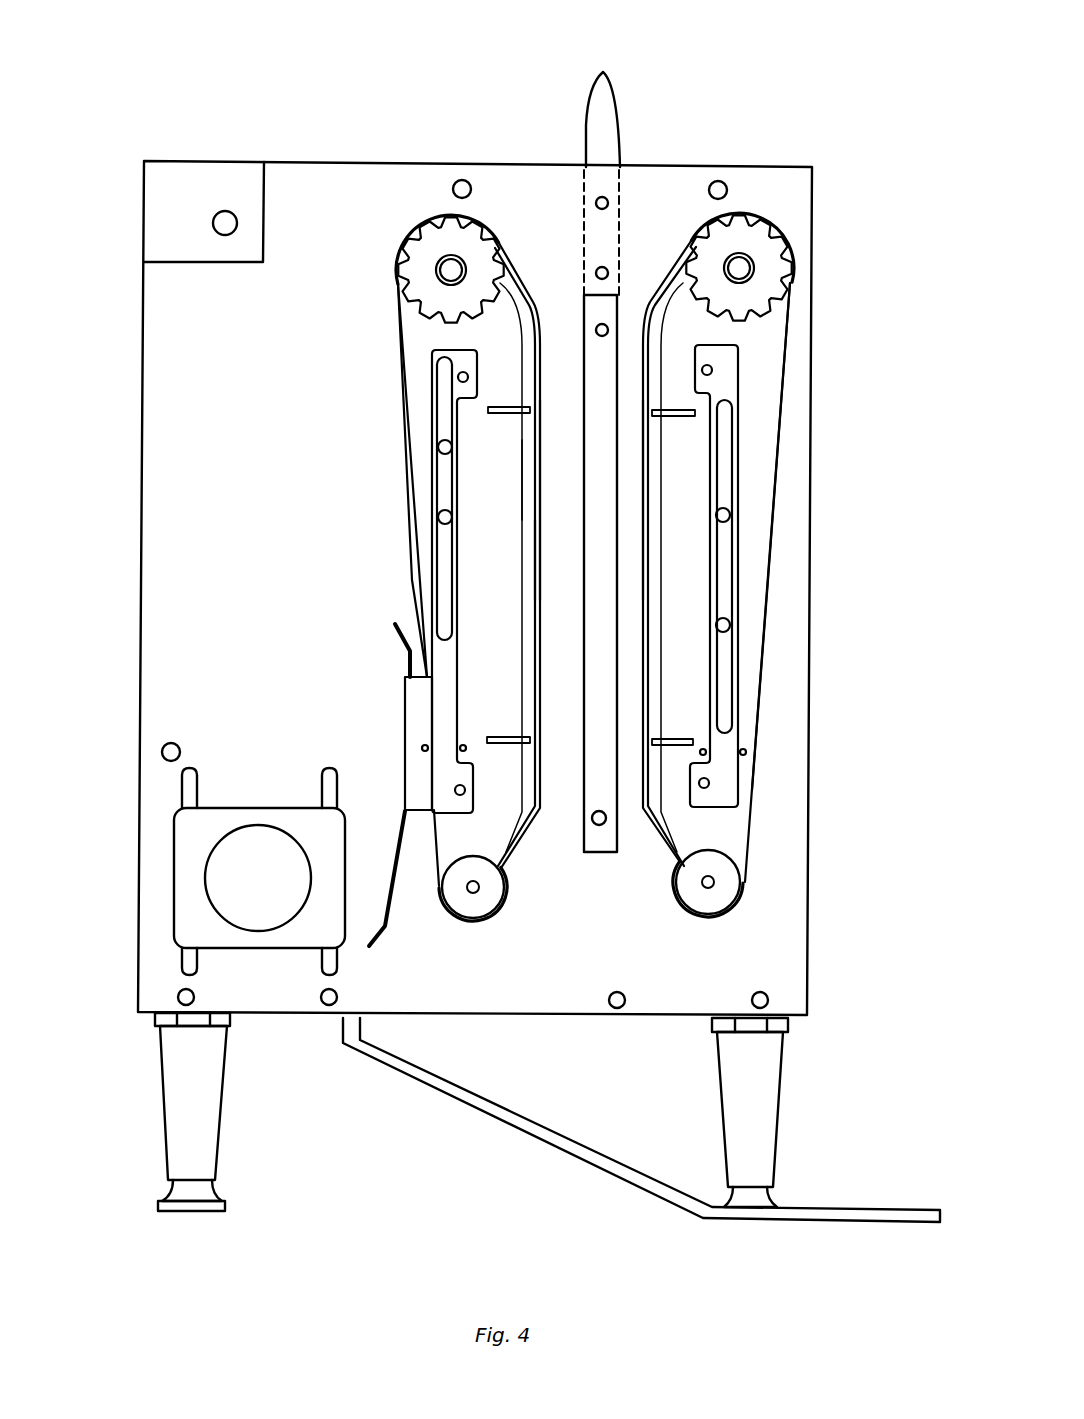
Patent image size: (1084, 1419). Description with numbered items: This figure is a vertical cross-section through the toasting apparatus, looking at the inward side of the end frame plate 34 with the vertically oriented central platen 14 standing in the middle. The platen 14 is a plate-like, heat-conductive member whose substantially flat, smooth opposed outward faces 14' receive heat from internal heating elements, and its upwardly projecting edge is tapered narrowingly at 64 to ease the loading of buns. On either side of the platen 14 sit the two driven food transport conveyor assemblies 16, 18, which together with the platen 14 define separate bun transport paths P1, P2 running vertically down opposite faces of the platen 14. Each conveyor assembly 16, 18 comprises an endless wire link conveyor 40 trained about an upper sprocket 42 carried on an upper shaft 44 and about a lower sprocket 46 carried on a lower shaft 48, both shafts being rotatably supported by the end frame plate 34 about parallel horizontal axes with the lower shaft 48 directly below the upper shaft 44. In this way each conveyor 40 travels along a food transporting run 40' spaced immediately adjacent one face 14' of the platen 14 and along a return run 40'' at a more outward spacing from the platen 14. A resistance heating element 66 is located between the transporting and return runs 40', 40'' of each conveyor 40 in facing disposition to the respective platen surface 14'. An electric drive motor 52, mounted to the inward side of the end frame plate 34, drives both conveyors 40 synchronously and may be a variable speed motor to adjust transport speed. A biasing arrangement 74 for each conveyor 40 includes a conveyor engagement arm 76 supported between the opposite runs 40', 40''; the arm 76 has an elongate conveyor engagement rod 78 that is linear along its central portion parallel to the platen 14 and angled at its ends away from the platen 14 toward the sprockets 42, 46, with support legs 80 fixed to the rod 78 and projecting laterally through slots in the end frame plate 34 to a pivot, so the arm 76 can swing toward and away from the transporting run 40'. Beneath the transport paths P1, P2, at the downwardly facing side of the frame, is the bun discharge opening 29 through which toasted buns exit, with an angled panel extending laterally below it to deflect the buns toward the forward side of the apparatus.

The central platen 14 is at (588, 567).
The outward faces of the platen 14' is at (604, 248).
The food transport conveyor assembly 16 is at (377, 357).
The food transport conveyor assembly 18 is at (787, 407).
The bun discharge opening 29 is at (543, 1003).
The end frame plate 34 is at (216, 551).
The endless wire link conveyor 40 is at (602, 431).
The food transporting run 40' is at (591, 493).
The return run 40'' is at (603, 665).
The upper sprocket 42 is at (442, 237).
The upper shaft 44 is at (450, 269).
The lower sprocket 46 is at (488, 904).
The lower shaft 48 is at (468, 890).
The electric drive motor 52 is at (187, 852).
The tapered edge of the platen 64 is at (608, 97).
The resistance heating element 66 is at (443, 517).
The biasing arrangement 74 is at (518, 699).
The conveyor engagement arm 76 is at (523, 487).
The conveyor engagement rod 78 is at (528, 570).
The support leg 80 is at (518, 409).
The bun transport path P1 is at (549, 220).
The bun transport path P2 is at (644, 220).